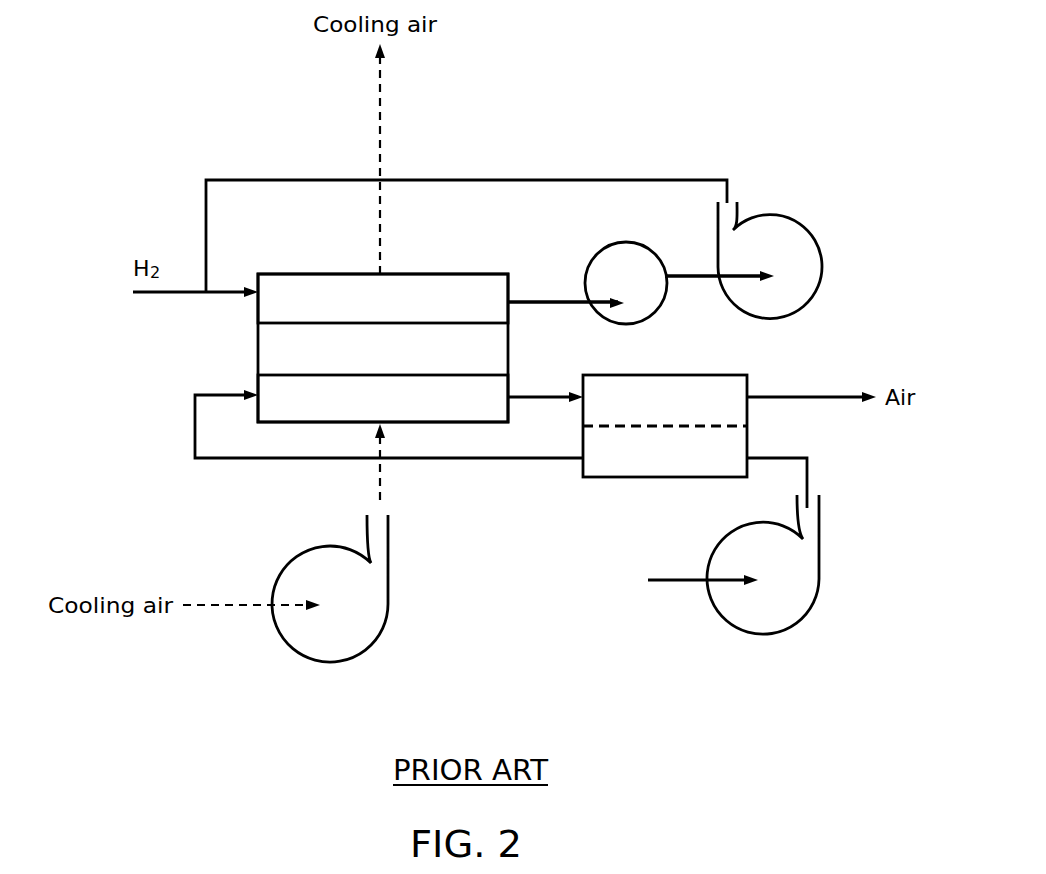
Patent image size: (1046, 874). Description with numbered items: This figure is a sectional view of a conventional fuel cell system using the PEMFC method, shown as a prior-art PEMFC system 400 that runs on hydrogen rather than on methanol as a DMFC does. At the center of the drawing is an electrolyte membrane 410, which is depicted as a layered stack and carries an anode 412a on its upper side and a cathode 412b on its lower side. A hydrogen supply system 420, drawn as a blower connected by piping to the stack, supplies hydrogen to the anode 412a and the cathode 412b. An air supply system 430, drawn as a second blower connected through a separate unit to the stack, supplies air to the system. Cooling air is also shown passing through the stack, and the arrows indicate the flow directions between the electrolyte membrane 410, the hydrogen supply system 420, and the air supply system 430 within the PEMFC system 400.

The PEMFC system 400 is at (227, 142).
The electrolyte membrane 410 is at (258, 350).
The anode 412a is at (462, 274).
The cathode 412b is at (470, 423).
The hydrogen supply system 420 is at (788, 192).
The air supply system 430 is at (865, 486).